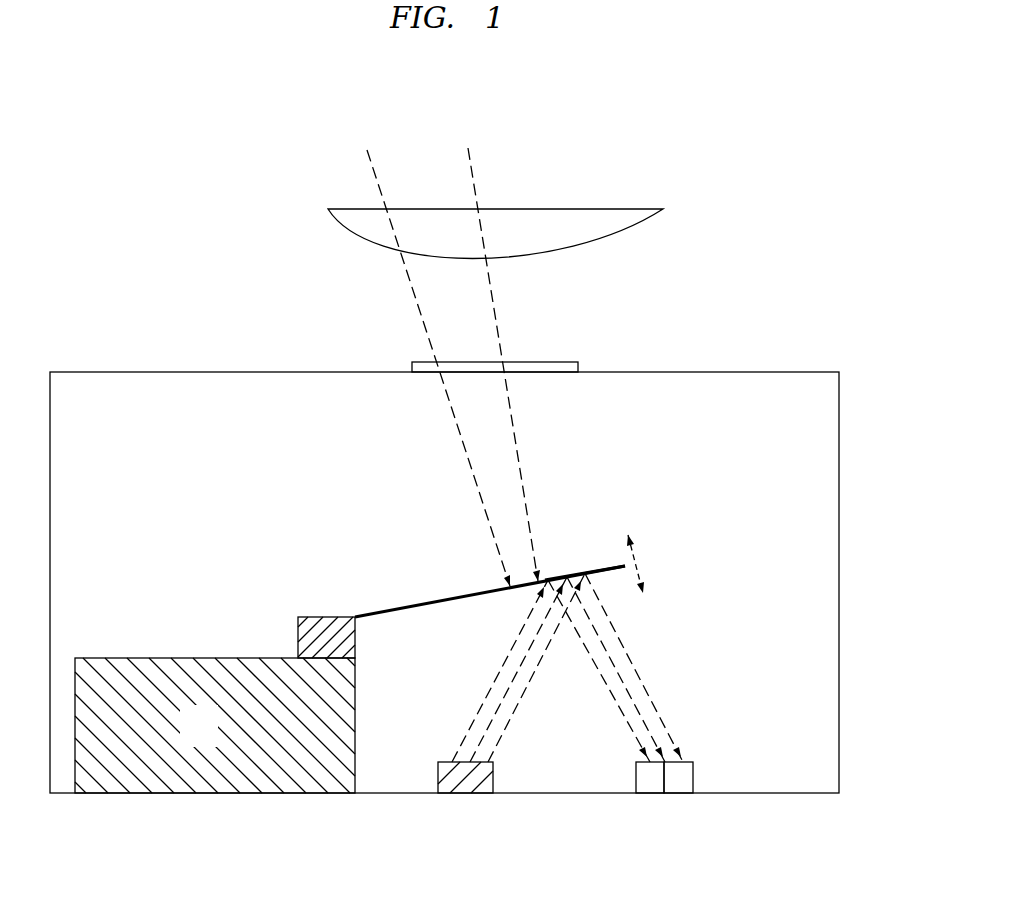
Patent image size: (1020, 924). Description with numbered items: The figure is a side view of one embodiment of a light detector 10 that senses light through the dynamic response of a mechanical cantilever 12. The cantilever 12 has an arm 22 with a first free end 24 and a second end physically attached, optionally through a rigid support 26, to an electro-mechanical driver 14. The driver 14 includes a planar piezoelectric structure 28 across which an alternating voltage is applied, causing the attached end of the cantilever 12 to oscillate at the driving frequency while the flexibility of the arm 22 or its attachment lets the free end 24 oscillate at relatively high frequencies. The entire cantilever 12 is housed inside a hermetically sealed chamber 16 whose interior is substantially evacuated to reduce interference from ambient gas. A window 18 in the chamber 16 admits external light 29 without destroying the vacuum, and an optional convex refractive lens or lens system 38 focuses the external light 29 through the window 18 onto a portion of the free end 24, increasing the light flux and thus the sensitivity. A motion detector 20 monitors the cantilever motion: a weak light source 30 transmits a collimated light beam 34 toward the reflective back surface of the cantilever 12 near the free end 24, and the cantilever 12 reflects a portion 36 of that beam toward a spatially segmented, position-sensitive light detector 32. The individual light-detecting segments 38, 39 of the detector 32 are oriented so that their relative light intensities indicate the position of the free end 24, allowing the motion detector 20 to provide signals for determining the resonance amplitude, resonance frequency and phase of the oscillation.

The light detector 10 is at (834, 170).
The mechanical cantilever 12 is at (499, 562).
The electro-mechanical driver 14 is at (215, 679).
The sealed chamber 16 is at (840, 372).
The window 18 is at (582, 362).
The motion detector 20 is at (612, 764).
The arm 22 is at (410, 604).
The first free end 24 is at (599, 573).
The rigid support 26 is at (297, 632).
The planar piezoelectric structure 28 is at (188, 741).
The external light 29 is at (437, 190).
The light source 30 is at (438, 792).
The light detector 32 is at (701, 736).
The collimated light beam 34 is at (505, 688).
The reflected portion of the collimated light beam 36 is at (607, 643).
The light-detecting segment / focusing lens system 38 is at (350, 238).
The light-detecting segment 39 is at (694, 776).